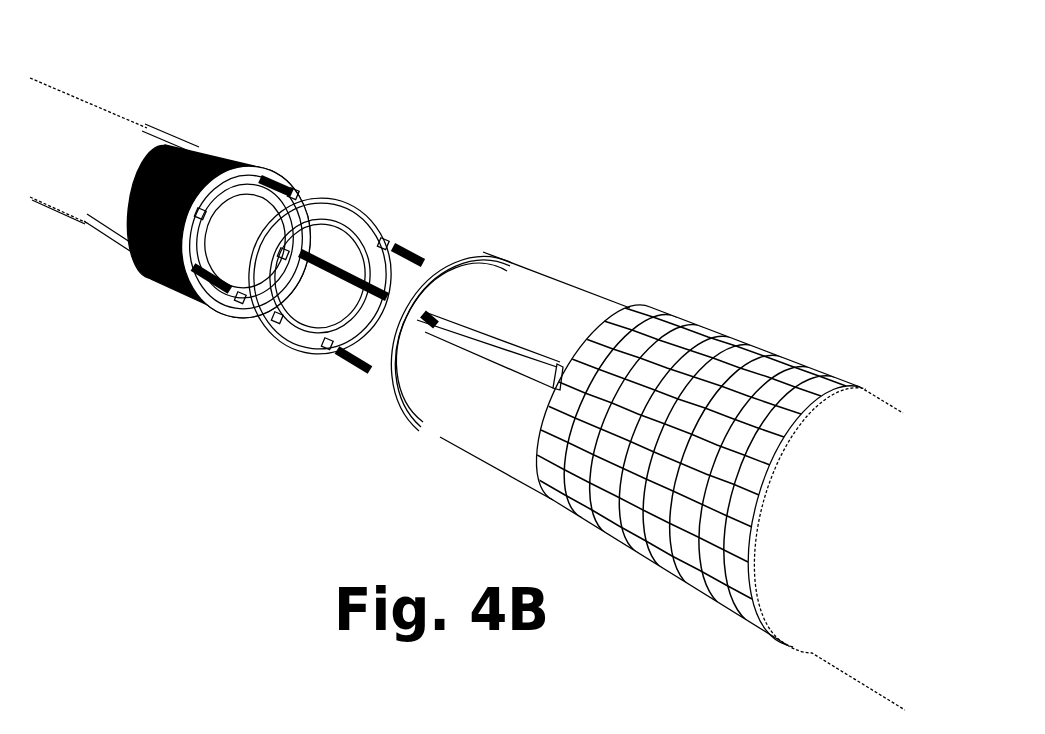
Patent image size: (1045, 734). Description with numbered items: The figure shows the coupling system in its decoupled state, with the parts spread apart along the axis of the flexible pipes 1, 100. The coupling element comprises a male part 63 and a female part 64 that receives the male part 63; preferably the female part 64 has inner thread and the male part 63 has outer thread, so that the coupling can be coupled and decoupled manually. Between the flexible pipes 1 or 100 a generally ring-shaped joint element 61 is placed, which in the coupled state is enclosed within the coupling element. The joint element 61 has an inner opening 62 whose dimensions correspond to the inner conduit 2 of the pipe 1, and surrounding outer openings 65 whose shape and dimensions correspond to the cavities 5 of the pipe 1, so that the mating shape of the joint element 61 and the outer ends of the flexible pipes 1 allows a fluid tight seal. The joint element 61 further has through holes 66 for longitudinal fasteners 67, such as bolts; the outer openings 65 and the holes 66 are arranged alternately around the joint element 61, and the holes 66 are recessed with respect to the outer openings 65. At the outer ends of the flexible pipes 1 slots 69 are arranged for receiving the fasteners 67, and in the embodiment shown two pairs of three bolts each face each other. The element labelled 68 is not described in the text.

The flexible pipe 1 is at (48, 117).
The inner conduit 2 is at (246, 258).
The cavity 5 is at (230, 186).
The joint element 61 is at (267, 330).
The inner opening 62 is at (332, 314).
The male part 63 is at (163, 267).
The female part 64 is at (747, 347).
The outer openings 65 is at (316, 224).
The through holes 66 is at (325, 348).
The longitudinal fasteners 67 is at (258, 184).
The hoop ring 68 is at (437, 323).
The slots 69 is at (113, 238).
The flexible pipe 100 is at (87, 198).